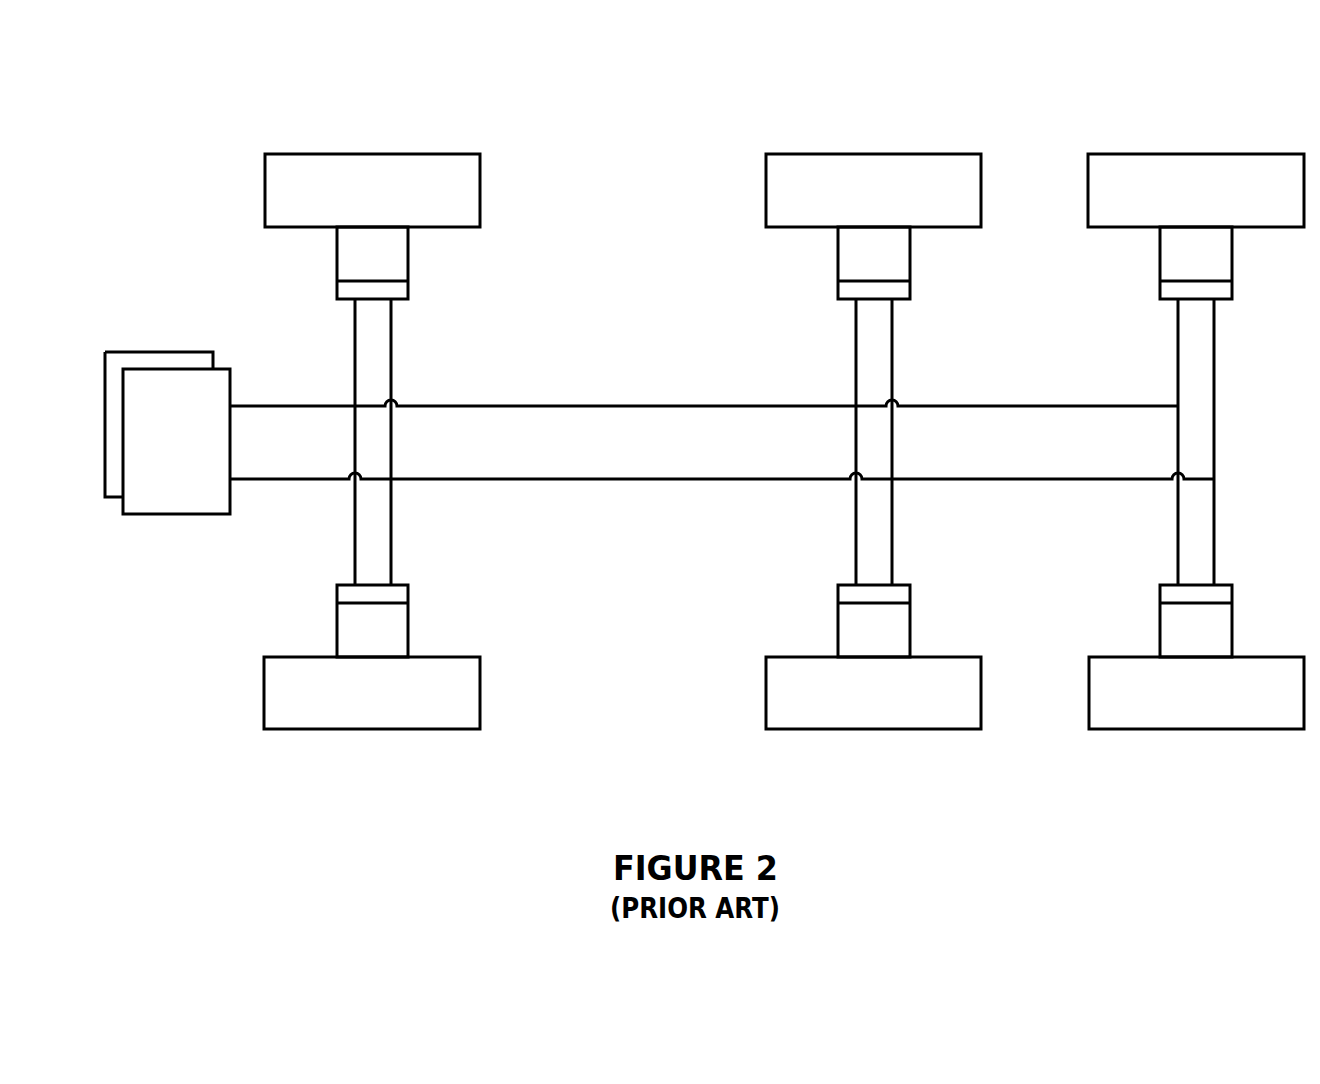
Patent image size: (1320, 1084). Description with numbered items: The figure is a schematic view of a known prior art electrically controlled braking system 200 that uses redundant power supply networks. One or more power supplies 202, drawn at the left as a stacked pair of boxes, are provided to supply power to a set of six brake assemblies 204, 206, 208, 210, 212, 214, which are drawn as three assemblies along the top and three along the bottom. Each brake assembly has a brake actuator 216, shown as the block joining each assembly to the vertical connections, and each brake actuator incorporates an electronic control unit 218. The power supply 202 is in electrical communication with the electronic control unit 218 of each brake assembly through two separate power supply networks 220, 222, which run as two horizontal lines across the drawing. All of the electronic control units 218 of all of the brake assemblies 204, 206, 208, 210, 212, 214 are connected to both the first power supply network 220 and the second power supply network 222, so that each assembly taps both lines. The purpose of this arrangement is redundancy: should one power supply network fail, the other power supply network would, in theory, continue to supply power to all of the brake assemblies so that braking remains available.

The redundant power supply system 200 is at (704, 495).
The power supply 202 is at (197, 378).
The brake assembly 204 is at (418, 165).
The brake assembly 206 is at (793, 165).
The brake assembly 208 is at (1123, 165).
The brake assembly 210 is at (433, 712).
The brake assembly 212 is at (819, 717).
The brake assembly 214 is at (1117, 716).
The brake actuator 216 is at (390, 252).
The electronic control unit 218 is at (857, 288).
The power supply network 220 is at (704, 387).
The power supply network 222 is at (722, 500).